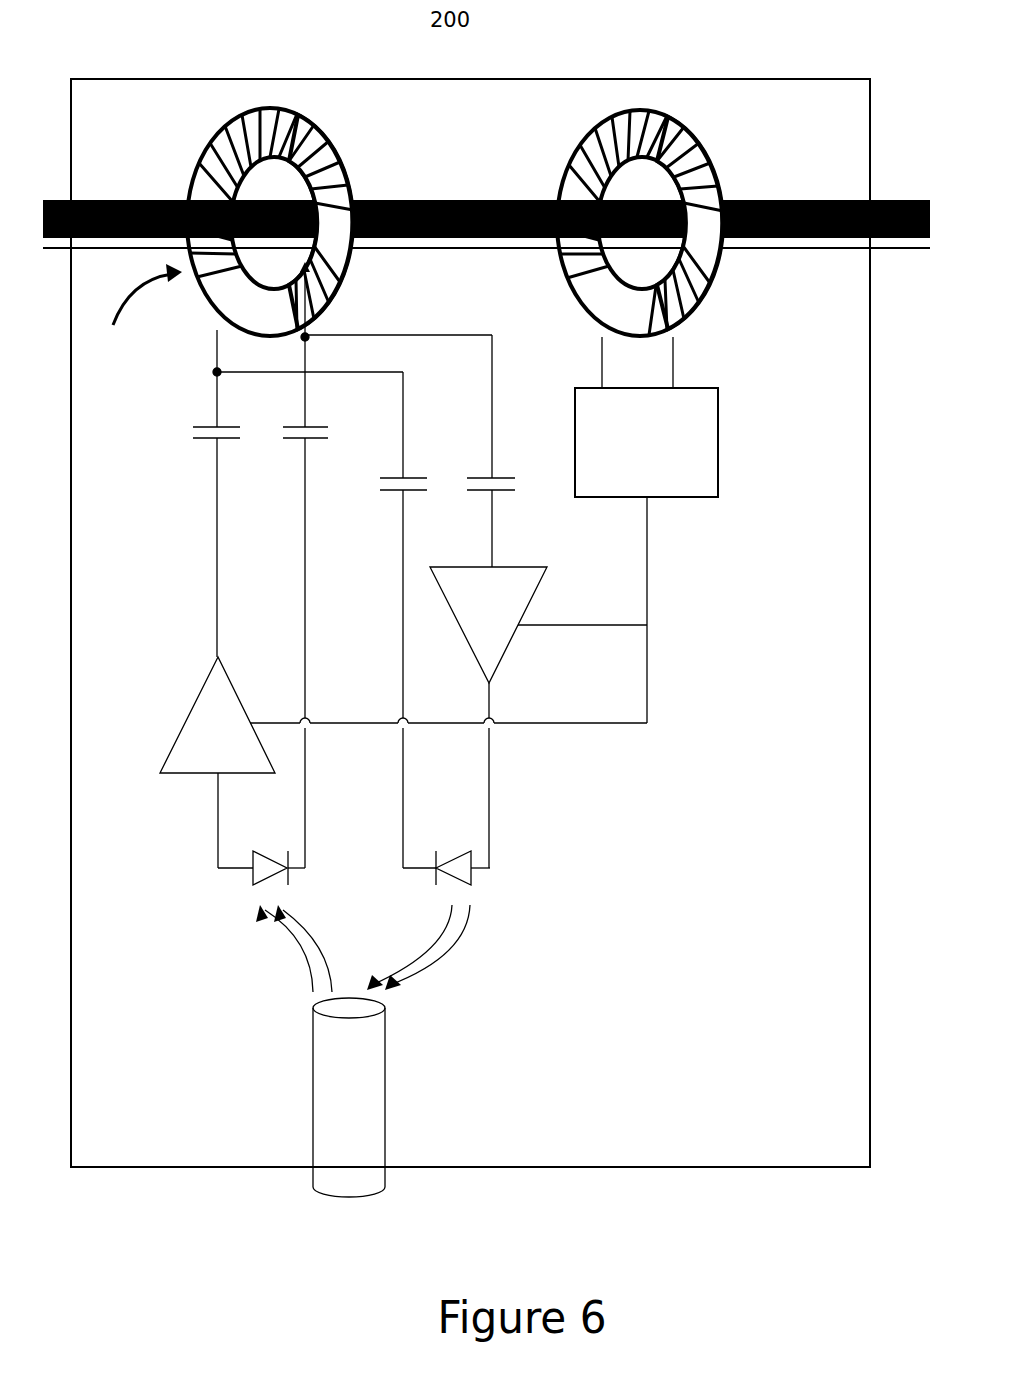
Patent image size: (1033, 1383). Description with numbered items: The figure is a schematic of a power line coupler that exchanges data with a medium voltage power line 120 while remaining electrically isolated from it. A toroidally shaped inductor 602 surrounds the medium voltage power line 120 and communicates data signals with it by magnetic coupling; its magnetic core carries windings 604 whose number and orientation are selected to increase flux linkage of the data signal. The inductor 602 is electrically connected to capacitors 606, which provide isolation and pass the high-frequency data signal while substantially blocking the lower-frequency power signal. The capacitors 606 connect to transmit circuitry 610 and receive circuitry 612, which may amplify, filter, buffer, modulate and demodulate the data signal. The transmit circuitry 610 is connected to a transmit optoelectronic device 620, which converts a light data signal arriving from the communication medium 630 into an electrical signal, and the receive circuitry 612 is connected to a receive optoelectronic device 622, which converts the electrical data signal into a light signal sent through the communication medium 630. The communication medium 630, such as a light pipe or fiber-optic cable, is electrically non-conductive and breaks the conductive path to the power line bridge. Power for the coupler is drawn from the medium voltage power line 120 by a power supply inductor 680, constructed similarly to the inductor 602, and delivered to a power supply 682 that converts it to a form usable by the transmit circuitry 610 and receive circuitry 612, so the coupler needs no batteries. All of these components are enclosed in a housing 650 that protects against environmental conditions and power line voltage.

The medium voltage power line 120 is at (780, 250).
The inductor 602 is at (193, 167).
The windings 604 is at (337, 160).
The capacitors 606 is at (192, 427).
The transmit circuitry 610 is at (218, 657).
The receive circuitry 612 is at (510, 567).
The transmit optoelectronic device 620 is at (253, 880).
The receive optoelectronic device 622 is at (470, 883).
The communication medium 630 is at (313, 1105).
The housing 650 is at (662, 1167).
The power supply inductor 680 is at (722, 178).
The power supply 682 is at (646, 442).